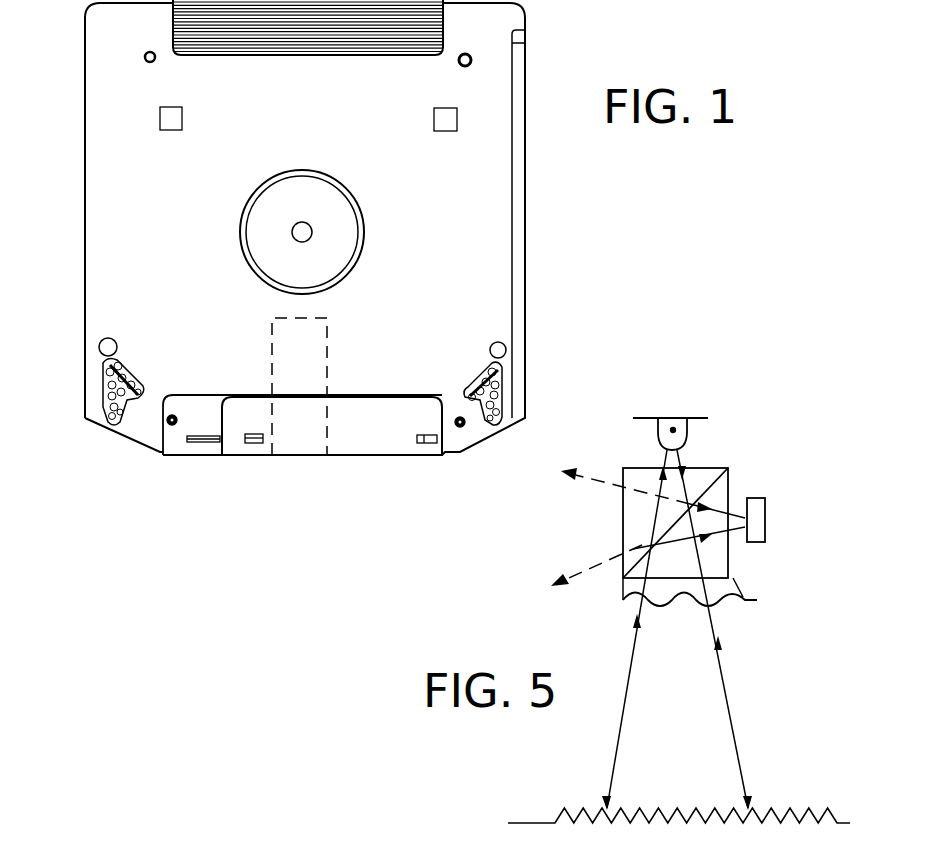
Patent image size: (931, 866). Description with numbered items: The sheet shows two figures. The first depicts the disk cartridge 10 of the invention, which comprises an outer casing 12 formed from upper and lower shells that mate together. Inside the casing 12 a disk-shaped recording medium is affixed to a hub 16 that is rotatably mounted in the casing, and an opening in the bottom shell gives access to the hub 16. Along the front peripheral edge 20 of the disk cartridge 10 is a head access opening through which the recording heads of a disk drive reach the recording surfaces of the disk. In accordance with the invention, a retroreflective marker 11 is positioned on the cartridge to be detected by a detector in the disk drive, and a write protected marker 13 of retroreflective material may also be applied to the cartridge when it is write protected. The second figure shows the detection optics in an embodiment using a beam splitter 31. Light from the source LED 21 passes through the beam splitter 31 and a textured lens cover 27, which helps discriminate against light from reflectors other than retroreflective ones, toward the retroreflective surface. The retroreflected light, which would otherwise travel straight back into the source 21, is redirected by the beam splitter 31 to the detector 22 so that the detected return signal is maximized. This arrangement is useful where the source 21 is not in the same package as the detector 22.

In FIG. 1, the disk cartridge 10 is at (541, 63).
In FIG. 1, the retroreflective marker 11 is at (475, 382).
In FIG. 5, the retroreflective marker 11 is at (810, 808).
In FIG. 1, the outer casing 12 is at (85, 262).
In FIG. 1, the write protected marker 13 is at (130, 377).
In FIG. 1, the hub 16 is at (297, 170).
In FIG. 1, the front peripheral edge 20 is at (163, 453).
In FIG. 5, the source LED 21 is at (687, 445).
In FIG. 5, the detector 22 is at (755, 498).
In FIG. 5, the textured lens cover 27 is at (622, 587).
In FIG. 5, the beam splitter 31 is at (622, 518).